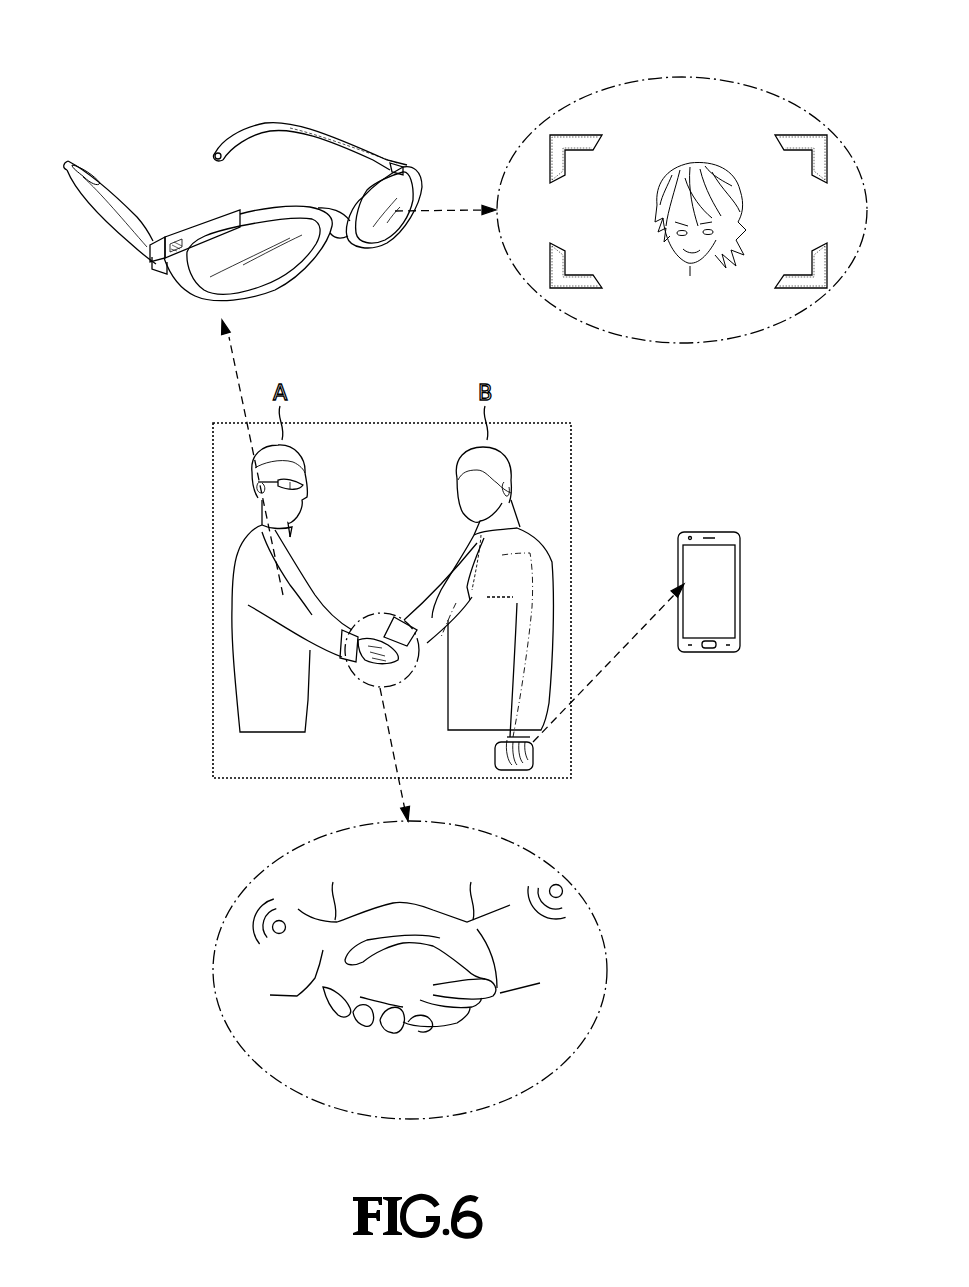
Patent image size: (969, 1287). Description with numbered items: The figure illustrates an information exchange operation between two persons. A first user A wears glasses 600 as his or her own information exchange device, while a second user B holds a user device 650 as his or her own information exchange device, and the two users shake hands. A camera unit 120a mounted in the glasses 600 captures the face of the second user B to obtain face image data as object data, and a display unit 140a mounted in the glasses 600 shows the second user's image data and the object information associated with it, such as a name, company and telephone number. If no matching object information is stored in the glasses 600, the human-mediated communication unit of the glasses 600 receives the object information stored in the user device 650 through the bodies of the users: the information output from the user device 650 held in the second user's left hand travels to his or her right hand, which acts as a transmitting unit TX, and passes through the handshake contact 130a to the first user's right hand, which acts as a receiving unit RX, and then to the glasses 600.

The glasses 600 is at (158, 307).
The camera unit 120a is at (176, 236).
The display unit 140a is at (262, 280).
The user device 650 is at (768, 572).
The body contact (handshake communication) 130a is at (404, 1035).